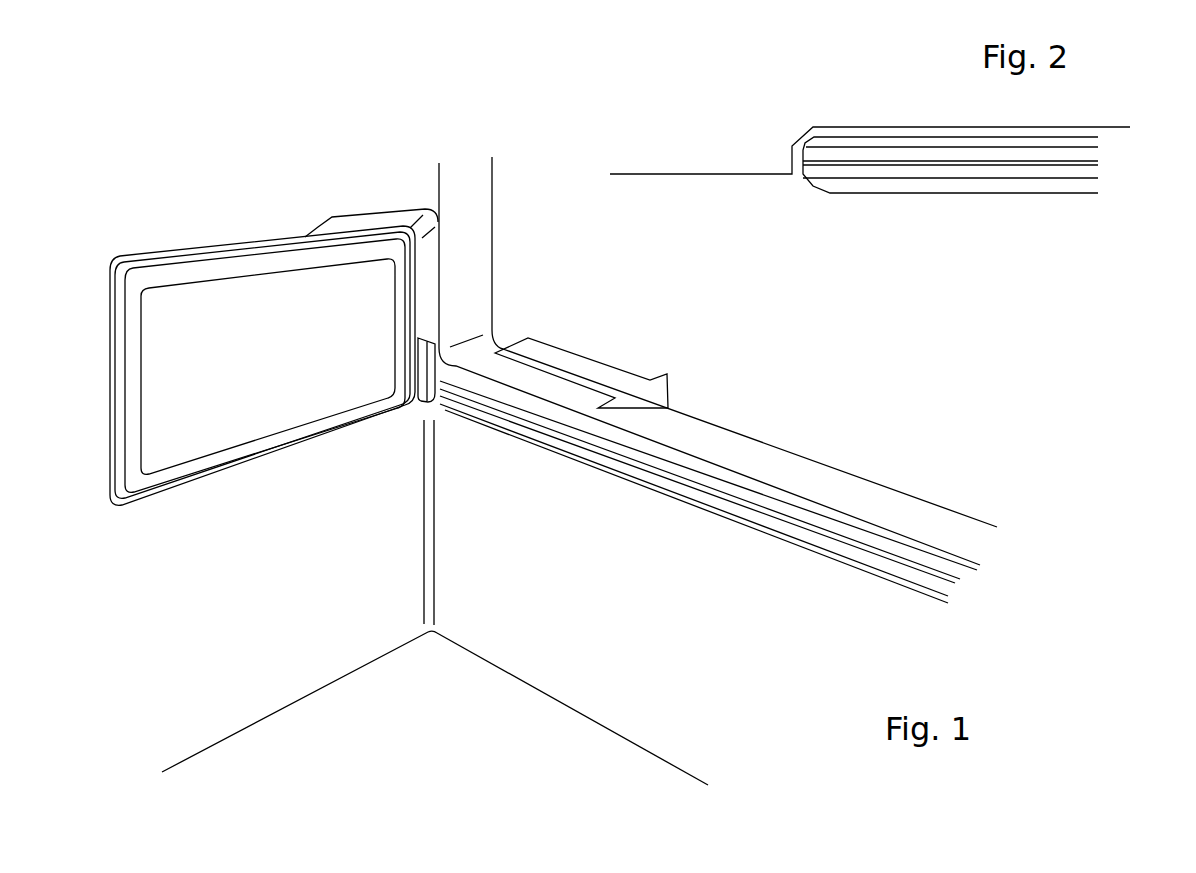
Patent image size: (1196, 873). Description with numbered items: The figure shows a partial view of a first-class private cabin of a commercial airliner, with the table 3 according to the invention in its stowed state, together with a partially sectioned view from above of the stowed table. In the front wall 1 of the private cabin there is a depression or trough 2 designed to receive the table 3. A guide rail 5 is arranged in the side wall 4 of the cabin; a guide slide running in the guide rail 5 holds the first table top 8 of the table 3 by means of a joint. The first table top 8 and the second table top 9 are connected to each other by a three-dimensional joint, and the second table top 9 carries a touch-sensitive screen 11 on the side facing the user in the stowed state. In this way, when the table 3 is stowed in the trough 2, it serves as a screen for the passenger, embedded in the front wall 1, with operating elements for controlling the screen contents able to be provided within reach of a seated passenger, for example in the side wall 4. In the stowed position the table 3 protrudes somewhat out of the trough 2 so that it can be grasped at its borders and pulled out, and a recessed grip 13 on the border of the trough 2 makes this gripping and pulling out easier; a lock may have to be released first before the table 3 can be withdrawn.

In FIG. 1, the front wall 1 is at (298, 628).
In FIG. 2, the trough 2 is at (880, 125).
In FIG. 2, the table 3 is at (990, 193).
In FIG. 1, the side wall 4 is at (607, 670).
In FIG. 1, the guide rail 5 is at (763, 513).
In FIG. 2, the first table top 8 is at (813, 155).
In FIG. 2, the second table top 9 is at (887, 172).
In FIG. 1, the touch-sensitive screen 11 is at (193, 300).
In FIG. 1, the recessed grip 13 is at (400, 218).